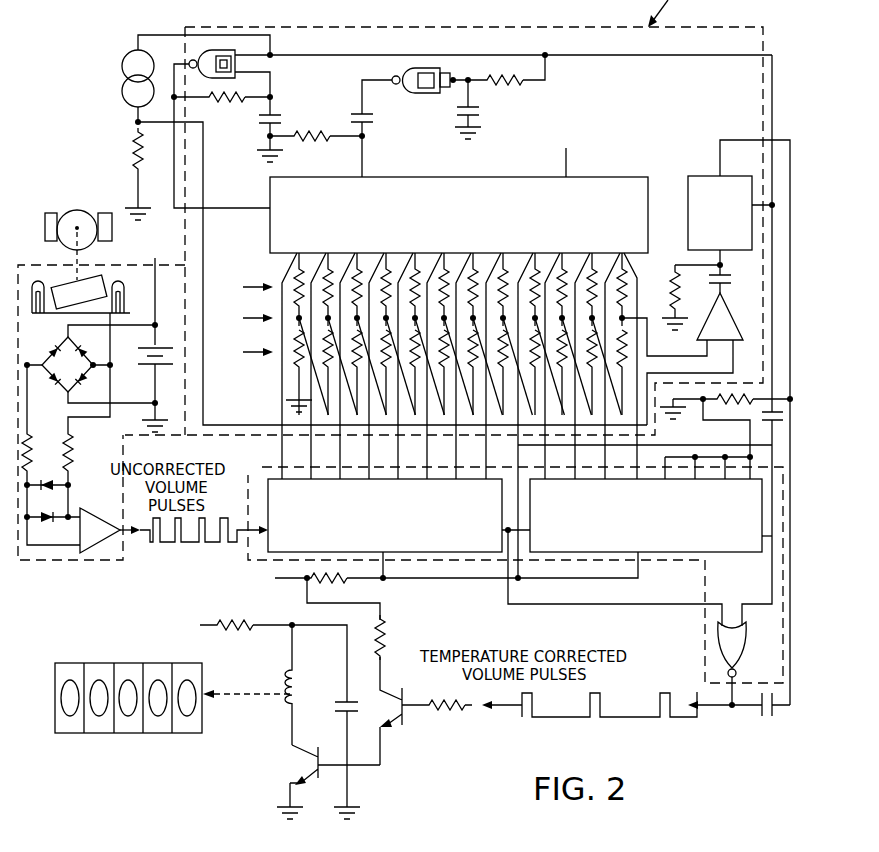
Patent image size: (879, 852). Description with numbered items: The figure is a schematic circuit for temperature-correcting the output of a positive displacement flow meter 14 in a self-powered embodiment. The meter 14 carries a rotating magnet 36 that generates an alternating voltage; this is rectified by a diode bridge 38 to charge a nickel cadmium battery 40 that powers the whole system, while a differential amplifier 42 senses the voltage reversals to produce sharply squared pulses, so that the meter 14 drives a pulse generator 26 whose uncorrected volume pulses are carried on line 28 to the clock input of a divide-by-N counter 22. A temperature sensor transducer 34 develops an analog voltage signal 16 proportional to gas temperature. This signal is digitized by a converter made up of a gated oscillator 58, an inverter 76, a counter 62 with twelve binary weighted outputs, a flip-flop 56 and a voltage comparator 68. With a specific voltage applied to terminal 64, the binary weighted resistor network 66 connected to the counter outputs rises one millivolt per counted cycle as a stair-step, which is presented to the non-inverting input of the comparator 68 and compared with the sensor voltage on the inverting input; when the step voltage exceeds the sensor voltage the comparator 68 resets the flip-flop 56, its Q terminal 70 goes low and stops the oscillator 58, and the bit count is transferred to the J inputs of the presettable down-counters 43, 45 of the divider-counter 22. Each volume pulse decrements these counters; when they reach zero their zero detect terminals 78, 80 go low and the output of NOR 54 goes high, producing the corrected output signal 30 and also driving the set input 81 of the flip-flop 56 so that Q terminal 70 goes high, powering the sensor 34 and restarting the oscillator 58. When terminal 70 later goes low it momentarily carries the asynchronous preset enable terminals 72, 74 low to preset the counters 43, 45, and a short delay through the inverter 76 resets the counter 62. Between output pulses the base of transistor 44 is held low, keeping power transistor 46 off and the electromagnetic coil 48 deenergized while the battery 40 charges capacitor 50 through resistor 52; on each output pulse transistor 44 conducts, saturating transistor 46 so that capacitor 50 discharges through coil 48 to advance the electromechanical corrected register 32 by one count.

The flow meter 14 is at (80, 172).
The analog voltage signal 16 is at (135, 123).
The divide-by-N counter 22 is at (462, 572).
The pulse generator 26 is at (45, 568).
The volume pulses line 28 is at (243, 533).
The digital output signal 30 is at (243, 698).
The corrected register 32 is at (125, 660).
The temperature sensor transducer 34 is at (118, 104).
The rotating magnet 36 is at (62, 277).
The diode bridge 38 is at (58, 388).
The nickel cadmium battery 40 is at (140, 358).
The differential amplifier 42 is at (108, 515).
The presettable counter 43 is at (298, 490).
The transistor 44 is at (406, 716).
The presettable counter 45 is at (647, 482).
The power transistor 46 is at (308, 758).
The electromagnetic coil 48 is at (282, 690).
The capacitor 50 is at (335, 705).
The resistor 52 is at (228, 620).
The NOR gate 54 is at (725, 642).
The flip-flop 56 is at (702, 182).
The gated oscillator 58 is at (222, 50).
The counter 62 is at (393, 190).
The voltage terminal 64 is at (570, 158).
The R/2R resistor network 66 is at (678, 250).
The voltage comparator 68 is at (725, 322).
The Q terminal 70 is at (763, 193).
The asynchronous preset enable terminal 72 is at (385, 560).
The asynchronous preset enable terminal 74 is at (638, 567).
The inverter 76 is at (427, 94).
The zero detect terminal 78 is at (532, 528).
The zero detect terminal 80 is at (763, 537).
The set input 81 is at (750, 138).